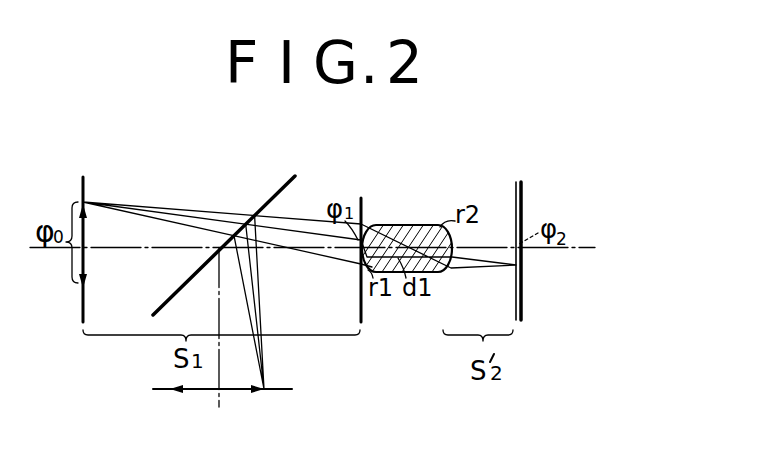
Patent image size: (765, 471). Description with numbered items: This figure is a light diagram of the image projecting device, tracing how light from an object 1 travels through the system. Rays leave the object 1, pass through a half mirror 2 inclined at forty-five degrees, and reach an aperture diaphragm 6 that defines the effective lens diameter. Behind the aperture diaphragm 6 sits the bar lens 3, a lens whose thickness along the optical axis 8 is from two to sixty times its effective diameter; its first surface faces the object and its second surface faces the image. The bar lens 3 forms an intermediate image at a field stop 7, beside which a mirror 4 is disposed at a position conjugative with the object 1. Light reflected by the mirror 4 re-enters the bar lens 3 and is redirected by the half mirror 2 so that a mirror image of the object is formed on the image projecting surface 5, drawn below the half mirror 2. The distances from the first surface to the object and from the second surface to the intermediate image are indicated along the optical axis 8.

The object 1 is at (86, 192).
The half mirror 2 is at (289, 180).
The bar lens 3 is at (388, 225).
The mirror 4 is at (522, 190).
The image projecting surface 5 is at (262, 391).
The aperture diaphragm 6 is at (361, 197).
The field stop 7 is at (515, 190).
The optical axis 8 is at (578, 247).